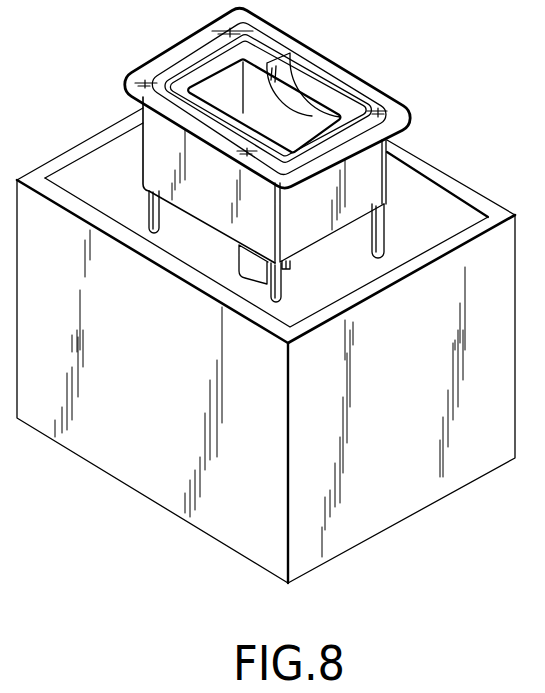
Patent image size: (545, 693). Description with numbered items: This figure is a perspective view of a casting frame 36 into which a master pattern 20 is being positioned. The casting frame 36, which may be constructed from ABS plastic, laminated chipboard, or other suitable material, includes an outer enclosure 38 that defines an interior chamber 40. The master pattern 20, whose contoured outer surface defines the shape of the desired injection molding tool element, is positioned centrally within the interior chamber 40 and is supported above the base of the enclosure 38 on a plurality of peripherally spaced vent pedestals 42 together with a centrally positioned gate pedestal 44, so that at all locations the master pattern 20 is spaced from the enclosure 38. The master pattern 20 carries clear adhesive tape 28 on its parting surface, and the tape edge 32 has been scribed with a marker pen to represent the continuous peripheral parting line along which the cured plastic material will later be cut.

The master pattern 20 is at (215, 225).
The clear adhesive tape 28 is at (408, 115).
The tape edge 32 is at (133, 83).
The casting frame 36 is at (168, 528).
The outer enclosure 38 is at (407, 492).
The interior chamber 40 is at (429, 207).
The vent pedestal 42 is at (150, 205).
The gate pedestal 44 is at (293, 264).